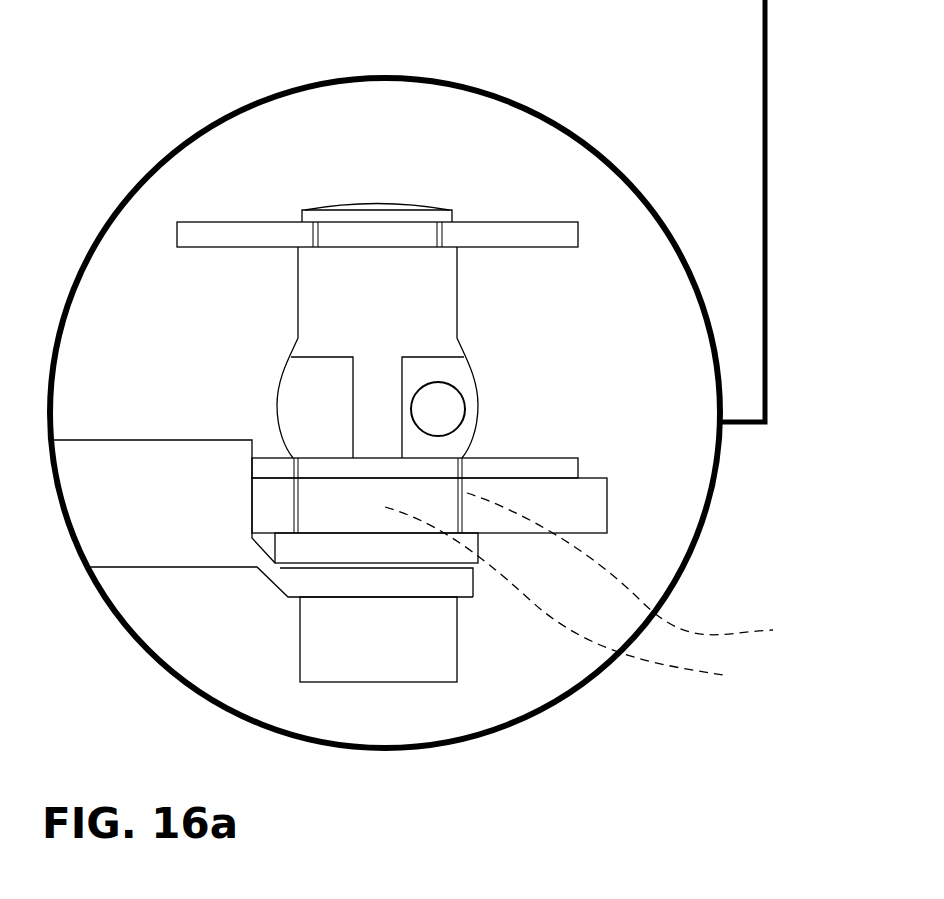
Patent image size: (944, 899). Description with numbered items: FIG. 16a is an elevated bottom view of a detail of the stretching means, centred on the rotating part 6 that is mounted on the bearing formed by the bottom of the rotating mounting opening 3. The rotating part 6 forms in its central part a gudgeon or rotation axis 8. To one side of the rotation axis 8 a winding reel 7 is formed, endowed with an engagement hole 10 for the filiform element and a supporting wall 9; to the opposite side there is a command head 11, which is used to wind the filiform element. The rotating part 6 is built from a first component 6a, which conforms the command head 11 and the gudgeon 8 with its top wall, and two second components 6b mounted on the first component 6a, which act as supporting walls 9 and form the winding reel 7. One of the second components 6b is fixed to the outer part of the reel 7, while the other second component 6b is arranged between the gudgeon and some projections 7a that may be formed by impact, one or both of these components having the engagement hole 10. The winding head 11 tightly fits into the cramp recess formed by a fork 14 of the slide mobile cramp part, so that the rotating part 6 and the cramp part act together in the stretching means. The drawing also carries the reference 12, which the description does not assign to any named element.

The rotating mounting opening 3 is at (633, 569).
The rotating part 6 is at (237, 185).
The first component 6a is at (273, 650).
The second component 6b is at (138, 233).
The winding reel 7 is at (500, 332).
The projections 7a is at (500, 449).
The gudgeon or rotation axis 8 is at (569, 599).
The supporting wall 9 is at (578, 235).
The engagement hole 10 is at (455, 410).
The command head 11 is at (440, 637).
The mounting plate 12 is at (260, 598).
The fork 14 is at (340, 587).